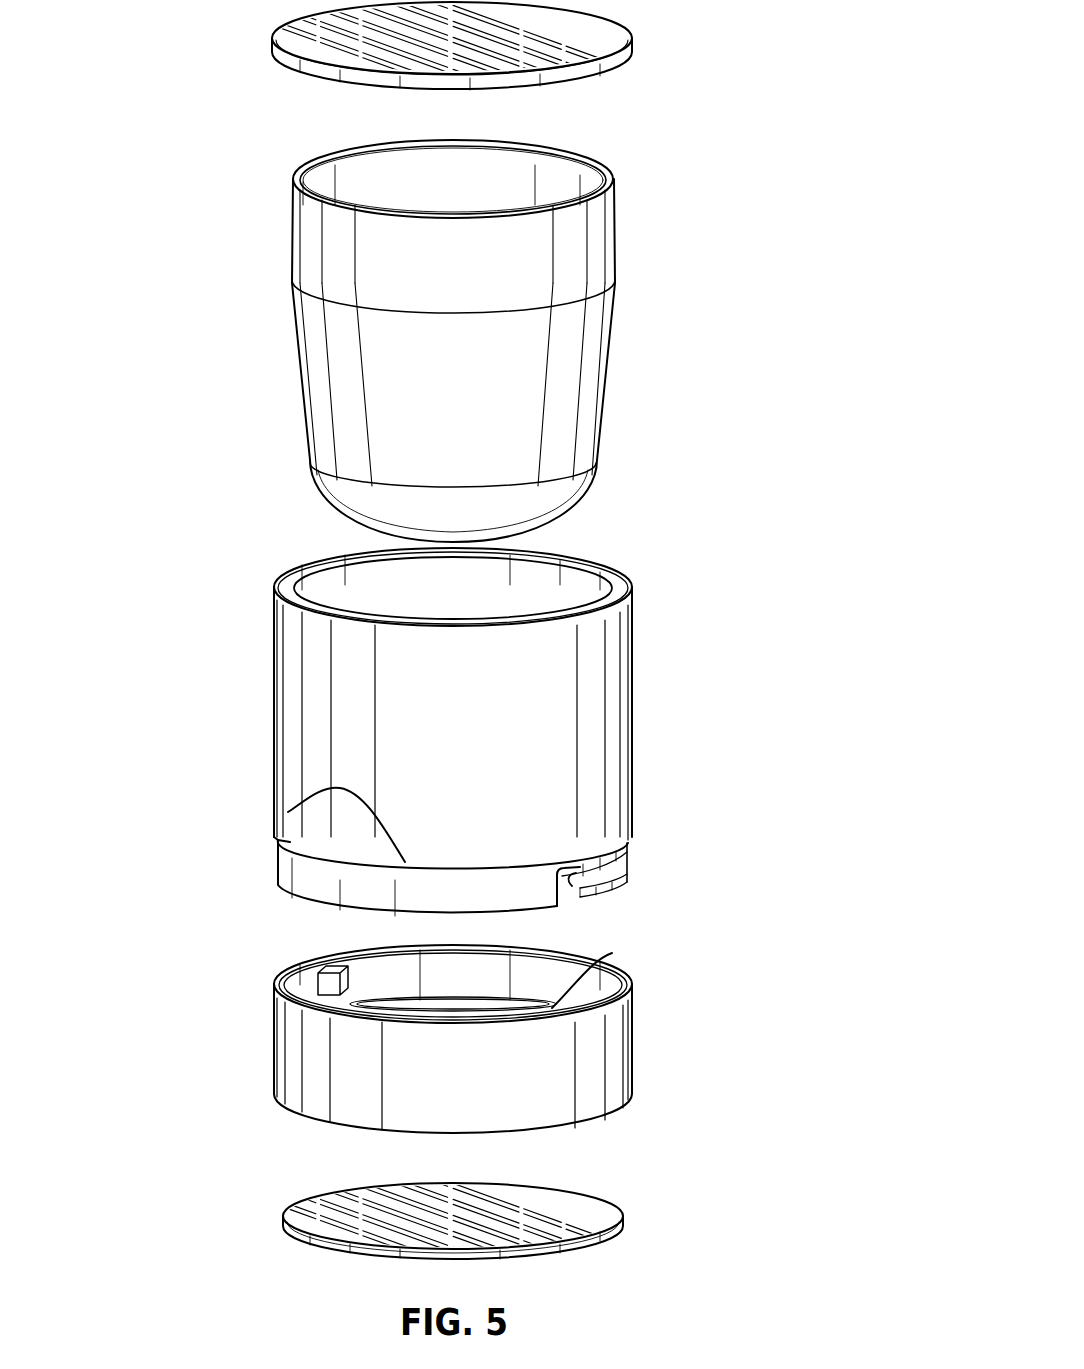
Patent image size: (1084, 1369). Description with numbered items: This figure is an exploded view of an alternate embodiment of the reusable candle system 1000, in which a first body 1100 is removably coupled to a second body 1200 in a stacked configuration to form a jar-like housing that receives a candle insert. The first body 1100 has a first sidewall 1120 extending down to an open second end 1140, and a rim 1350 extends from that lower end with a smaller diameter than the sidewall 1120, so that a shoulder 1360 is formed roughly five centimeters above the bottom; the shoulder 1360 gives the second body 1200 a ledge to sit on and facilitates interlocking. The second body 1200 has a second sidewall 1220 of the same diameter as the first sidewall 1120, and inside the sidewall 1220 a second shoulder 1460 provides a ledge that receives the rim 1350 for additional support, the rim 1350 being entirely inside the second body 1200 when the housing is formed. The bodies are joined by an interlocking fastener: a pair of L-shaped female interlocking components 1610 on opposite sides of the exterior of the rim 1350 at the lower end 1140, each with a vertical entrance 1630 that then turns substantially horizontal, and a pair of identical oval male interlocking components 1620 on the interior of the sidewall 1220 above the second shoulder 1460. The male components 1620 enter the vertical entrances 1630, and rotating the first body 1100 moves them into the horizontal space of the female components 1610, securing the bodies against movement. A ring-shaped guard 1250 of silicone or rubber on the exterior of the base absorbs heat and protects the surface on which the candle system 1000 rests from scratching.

The reusable candle system 1000 is at (726, 181).
The first body 1100 is at (453, 736).
The first sidewall 1120 is at (632, 757).
The open second end 1140 is at (288, 812).
The rim 1350 is at (278, 872).
The shoulder 1360 is at (278, 838).
The female interlocking component 1610 is at (628, 860).
The vertical entrance 1630 is at (573, 887).
The second body 1200 is at (454, 1025).
The second sidewall 1220 is at (274, 1043).
The male interlocking component 1620 is at (320, 970).
The second shoulder 1460 is at (612, 953).
The guard 1250 is at (623, 1222).